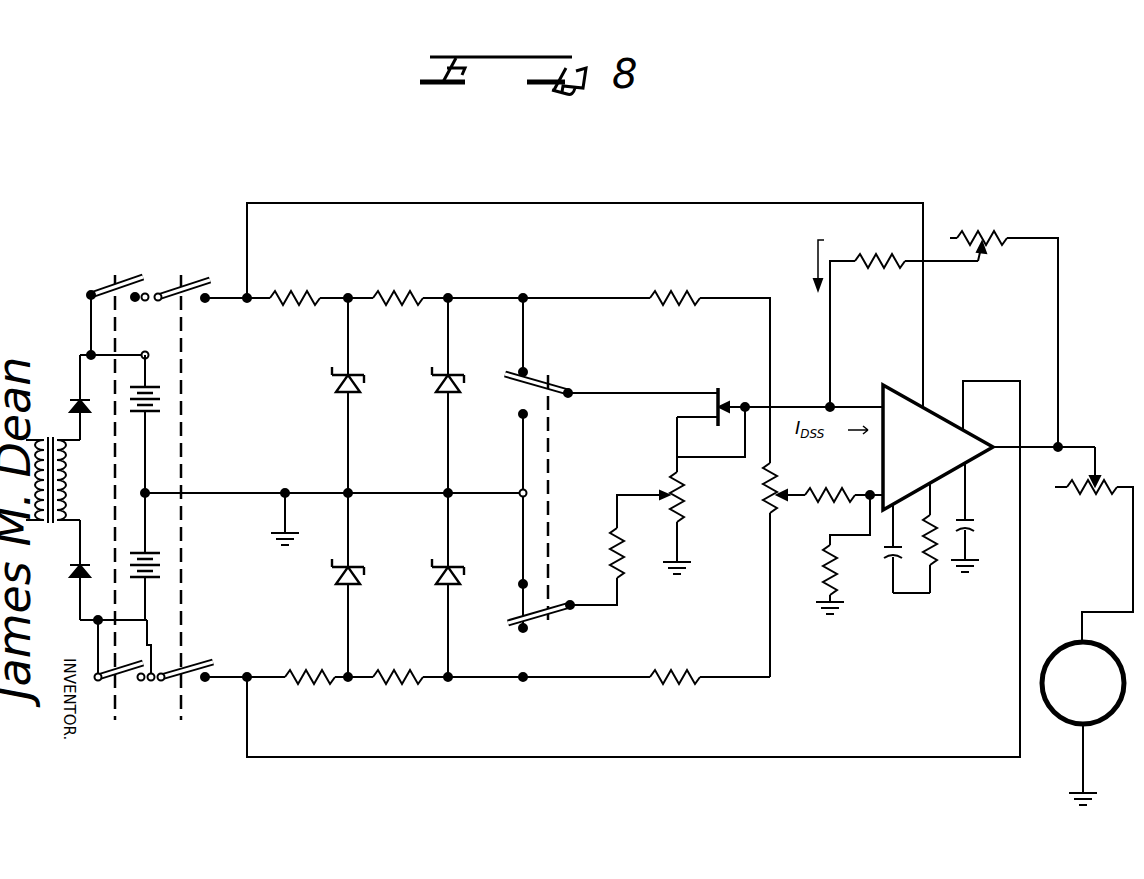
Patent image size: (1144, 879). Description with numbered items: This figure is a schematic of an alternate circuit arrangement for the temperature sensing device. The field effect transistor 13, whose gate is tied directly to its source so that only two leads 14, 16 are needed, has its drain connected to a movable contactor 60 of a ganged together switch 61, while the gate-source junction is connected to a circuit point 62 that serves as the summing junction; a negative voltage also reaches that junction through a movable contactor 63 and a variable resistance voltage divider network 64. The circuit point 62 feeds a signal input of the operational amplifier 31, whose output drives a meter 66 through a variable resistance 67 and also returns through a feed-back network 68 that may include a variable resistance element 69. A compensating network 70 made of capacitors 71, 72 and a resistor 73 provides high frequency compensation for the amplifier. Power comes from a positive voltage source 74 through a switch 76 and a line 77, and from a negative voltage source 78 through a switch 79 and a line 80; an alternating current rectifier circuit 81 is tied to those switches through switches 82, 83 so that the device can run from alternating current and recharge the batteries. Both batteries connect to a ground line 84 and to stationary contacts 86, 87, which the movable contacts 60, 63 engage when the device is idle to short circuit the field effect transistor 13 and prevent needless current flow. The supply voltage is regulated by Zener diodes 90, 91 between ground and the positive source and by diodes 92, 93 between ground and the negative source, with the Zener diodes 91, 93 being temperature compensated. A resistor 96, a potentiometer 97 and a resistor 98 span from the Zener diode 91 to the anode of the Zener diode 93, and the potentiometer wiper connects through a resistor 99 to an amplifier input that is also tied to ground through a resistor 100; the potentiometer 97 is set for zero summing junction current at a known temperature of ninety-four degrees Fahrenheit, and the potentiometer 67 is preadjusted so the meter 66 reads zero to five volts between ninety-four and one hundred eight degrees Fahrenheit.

The field effect transistor 13 is at (719, 390).
The lead 14 is at (690, 382).
The lead 16 is at (752, 407).
The operational amplifier 31 is at (930, 459).
The movable contactor 60 is at (545, 377).
The ganged together switch 61 is at (552, 446).
The circuit point 62 is at (833, 403).
The movable contactor 63 is at (563, 616).
The variable resistance voltage divider network 64 is at (650, 528).
The meter 66 is at (1105, 656).
The variable resistance 67 is at (1098, 497).
The feed-back network 68 is at (961, 264).
The variable resistance element 69 is at (985, 236).
The compensating network 70 is at (895, 551).
The capacitor 71 is at (890, 562).
The capacitor 72 is at (968, 520).
The resistor 73 is at (925, 530).
The positive voltage source 74 is at (157, 411).
The switch 76 is at (205, 280).
The line 77 is at (518, 192).
The negative voltage source 78 is at (150, 553).
The switch 79 is at (208, 660).
The line 80 is at (520, 748).
The alternating current rectifier circuit 81 is at (96, 486).
The switch 82 is at (100, 285).
The switch 83 is at (118, 680).
The ground line 84 is at (258, 493).
The stationary contact 86 is at (519, 414).
The stationary contact 87 is at (519, 584).
The Zener diode 90 is at (340, 392).
The Zener diode 91 is at (440, 392).
The Zener diode 92 is at (340, 584).
The Zener diode 93 is at (440, 584).
The resistor 96 is at (678, 292).
The potentiometer 97 is at (762, 500).
The resistor 98 is at (678, 673).
The resistor 99 is at (820, 493).
The resistor 100 is at (824, 573).